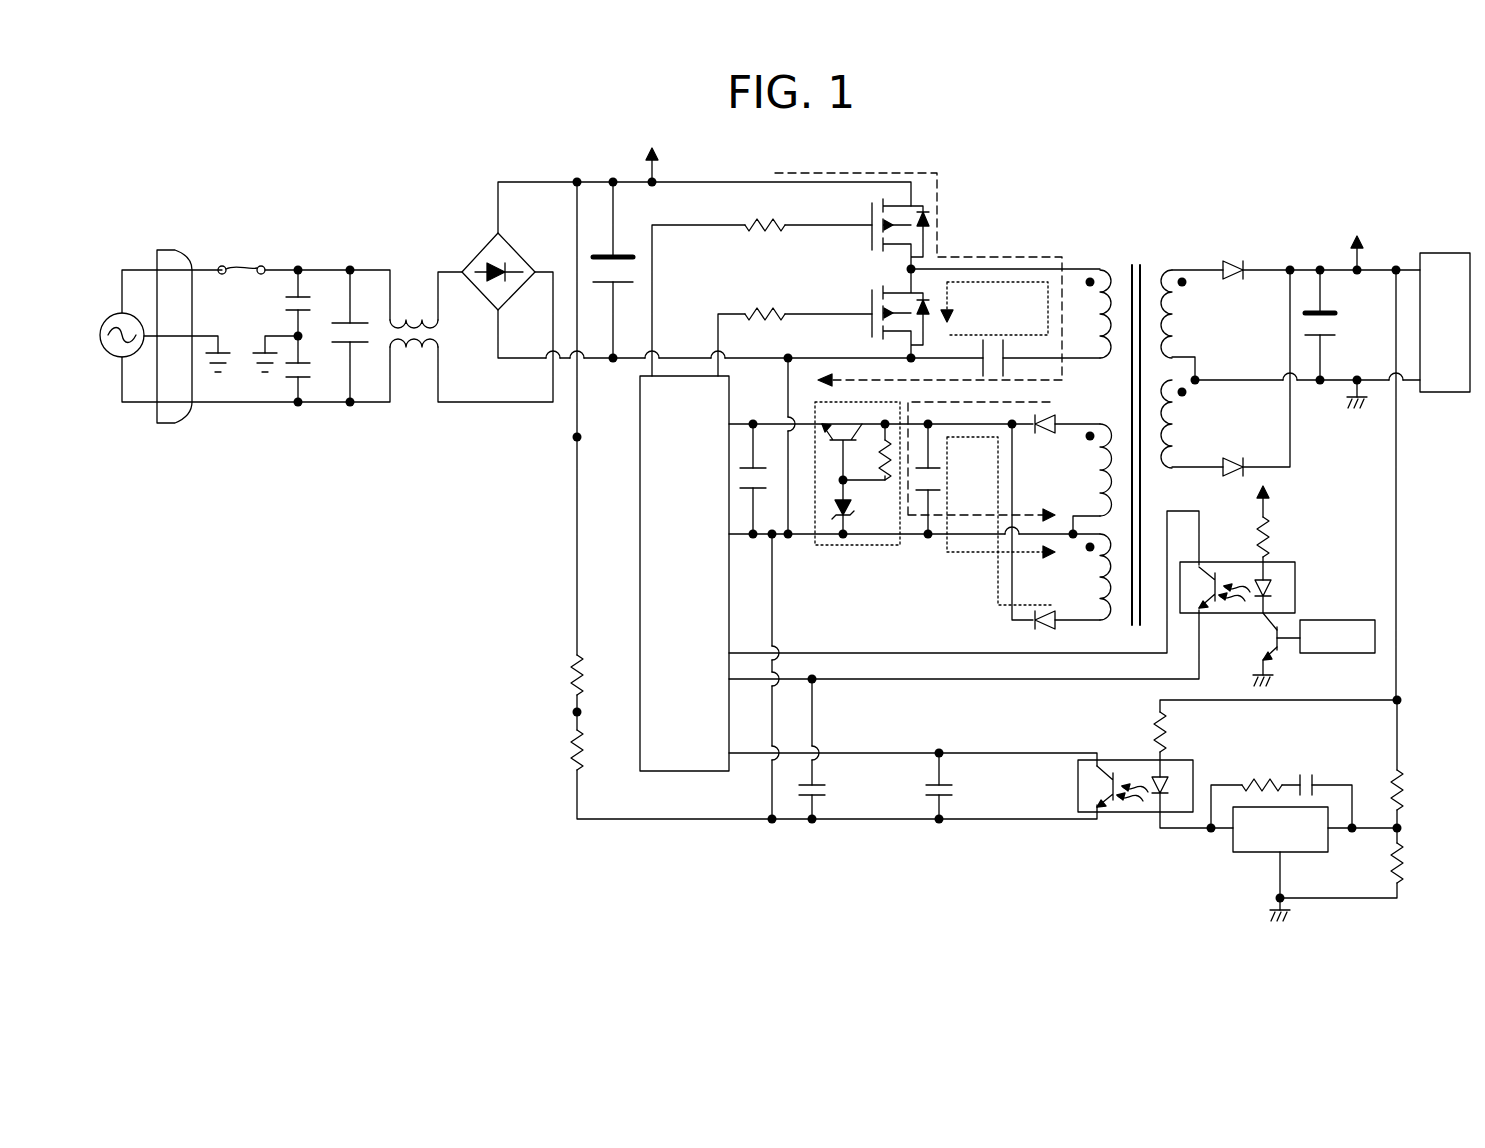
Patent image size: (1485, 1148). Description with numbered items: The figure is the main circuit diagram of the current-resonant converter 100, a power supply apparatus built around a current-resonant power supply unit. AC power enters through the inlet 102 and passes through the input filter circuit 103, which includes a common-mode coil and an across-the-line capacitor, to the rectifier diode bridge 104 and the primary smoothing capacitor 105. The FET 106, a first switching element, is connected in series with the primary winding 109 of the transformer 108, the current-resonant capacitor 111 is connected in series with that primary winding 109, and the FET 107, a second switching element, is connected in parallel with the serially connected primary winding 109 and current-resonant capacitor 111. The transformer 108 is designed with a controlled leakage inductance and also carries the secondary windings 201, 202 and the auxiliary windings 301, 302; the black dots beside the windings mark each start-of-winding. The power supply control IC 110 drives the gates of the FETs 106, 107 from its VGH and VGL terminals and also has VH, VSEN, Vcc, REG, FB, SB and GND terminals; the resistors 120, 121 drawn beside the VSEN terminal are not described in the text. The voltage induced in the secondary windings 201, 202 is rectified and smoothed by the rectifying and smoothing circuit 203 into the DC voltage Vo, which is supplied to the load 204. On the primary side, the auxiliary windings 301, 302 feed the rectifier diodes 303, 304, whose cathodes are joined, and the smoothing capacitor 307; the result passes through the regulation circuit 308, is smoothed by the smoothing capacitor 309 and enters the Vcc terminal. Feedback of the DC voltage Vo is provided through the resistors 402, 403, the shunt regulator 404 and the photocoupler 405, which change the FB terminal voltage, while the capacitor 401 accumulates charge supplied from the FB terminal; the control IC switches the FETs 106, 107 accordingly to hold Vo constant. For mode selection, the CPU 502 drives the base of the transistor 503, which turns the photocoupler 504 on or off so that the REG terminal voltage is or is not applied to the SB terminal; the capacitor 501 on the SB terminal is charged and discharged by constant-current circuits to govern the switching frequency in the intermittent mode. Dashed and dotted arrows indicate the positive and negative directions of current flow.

The current-resonant converter 100 is at (994, 150).
The inlet 102 is at (158, 262).
The input filter circuit 103 is at (358, 262).
The rectifier diode bridge 104 is at (478, 248).
The primary smoothing capacitor 105 is at (633, 270).
The FET 106 is at (864, 242).
The FET 107 is at (864, 308).
The transformer 108 is at (1138, 262).
The primary winding 109 is at (1098, 262).
The power supply control IC 110 is at (630, 757).
The current-resonant capacitor 111 is at (990, 345).
The voltage dividing resistor 120 is at (570, 668).
The voltage dividing resistor 121 is at (570, 745).
The secondary winding 201 is at (1183, 344).
The secondary winding 202 is at (1183, 440).
The rectifying and smoothing circuit 203 is at (1272, 262).
The load 204 is at (1435, 252).
The auxiliary winding 301 is at (1100, 479).
The auxiliary winding 302 is at (1100, 606).
The rectifier diode 303 is at (1068, 413).
The rectifier diode 304 is at (1026, 632).
The smoothing capacitor 307 is at (930, 548).
The regulation circuit 308 is at (848, 554).
The smoothing capacitor 309 is at (750, 546).
The capacitor 401 is at (955, 790).
The resistor 402 is at (1412, 800).
The resistor 403 is at (1412, 872).
The shunt regulator 404 is at (1245, 849).
The photocoupler 405 is at (1202, 772).
The capacitor 501 is at (828, 790).
The CPU 502 is at (1322, 608).
The transistor 503 is at (1285, 660).
The photocoupler 504 is at (1298, 563).